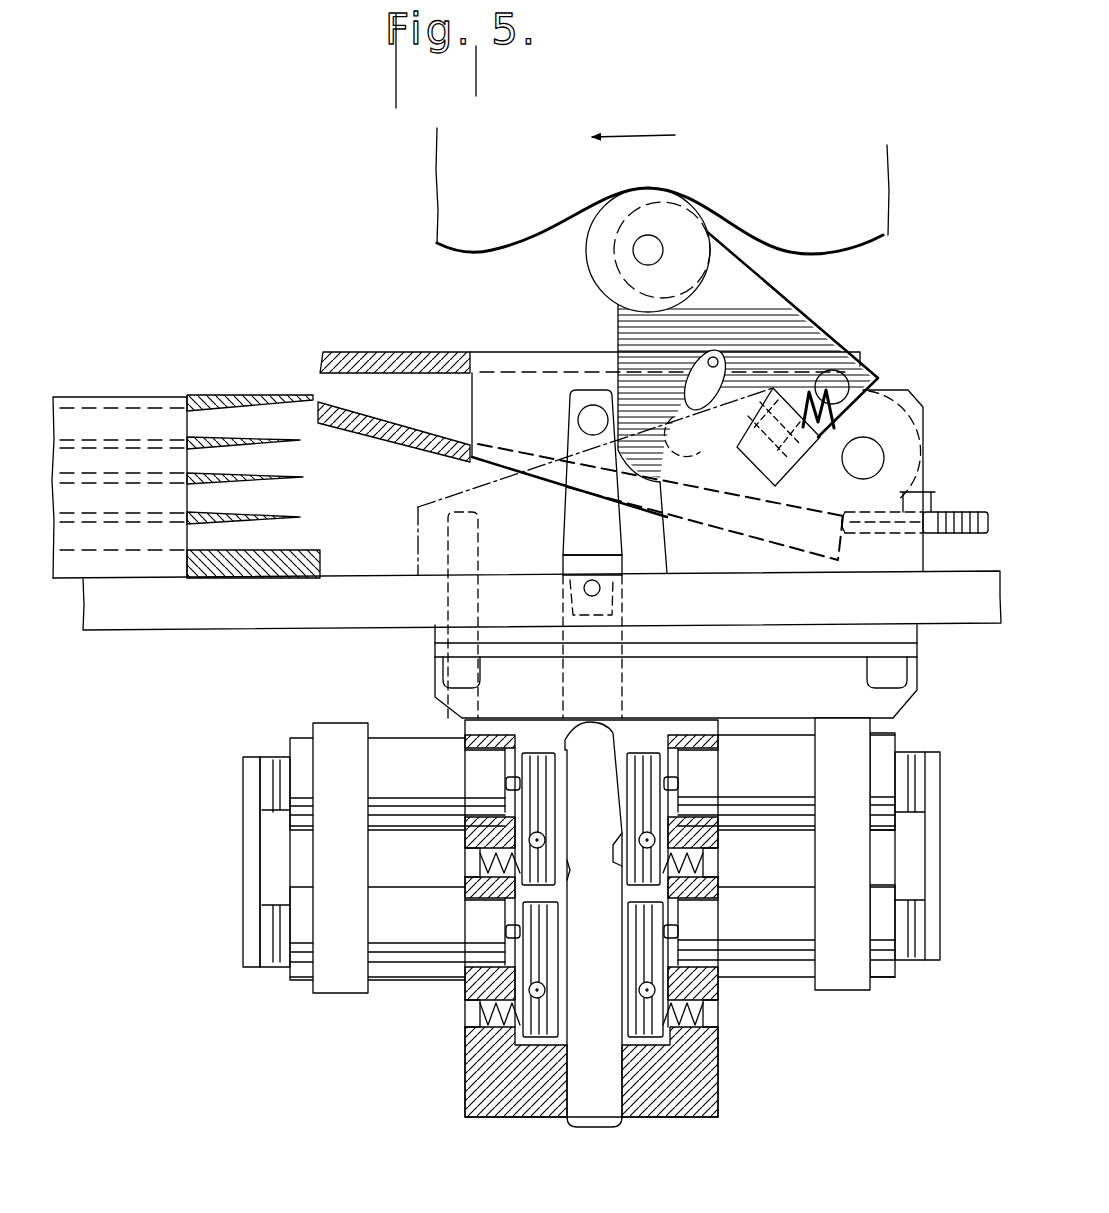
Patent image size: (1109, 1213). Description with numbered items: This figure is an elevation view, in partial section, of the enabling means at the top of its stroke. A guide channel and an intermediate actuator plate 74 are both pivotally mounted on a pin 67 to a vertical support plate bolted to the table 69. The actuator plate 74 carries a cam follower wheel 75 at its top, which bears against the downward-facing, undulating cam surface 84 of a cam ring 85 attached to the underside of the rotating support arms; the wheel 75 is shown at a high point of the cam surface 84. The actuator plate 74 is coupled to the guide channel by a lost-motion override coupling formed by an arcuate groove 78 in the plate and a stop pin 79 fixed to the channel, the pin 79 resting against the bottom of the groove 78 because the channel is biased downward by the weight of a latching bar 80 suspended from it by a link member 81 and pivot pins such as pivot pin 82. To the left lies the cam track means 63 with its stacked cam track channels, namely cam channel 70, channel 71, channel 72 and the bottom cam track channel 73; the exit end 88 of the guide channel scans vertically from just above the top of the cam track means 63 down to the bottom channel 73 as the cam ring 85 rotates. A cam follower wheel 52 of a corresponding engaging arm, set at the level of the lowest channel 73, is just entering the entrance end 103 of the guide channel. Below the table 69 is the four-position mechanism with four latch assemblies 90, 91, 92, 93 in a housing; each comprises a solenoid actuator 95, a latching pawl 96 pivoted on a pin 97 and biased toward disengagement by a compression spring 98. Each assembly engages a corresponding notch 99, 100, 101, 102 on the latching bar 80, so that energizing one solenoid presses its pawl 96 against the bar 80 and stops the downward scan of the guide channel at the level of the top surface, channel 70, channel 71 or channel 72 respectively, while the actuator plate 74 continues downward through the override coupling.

The cam follower wheel 52 is at (968, 535).
The cam track means 63 is at (193, 352).
The pin 67 is at (852, 470).
The table 69 is at (178, 617).
The cam channel 70 is at (197, 420).
The channel 71 is at (279, 462).
The channel 72 is at (274, 498).
The bottom cam track channel 73 is at (277, 537).
The actuator plate 74 is at (786, 308).
The cam follower wheel 75 is at (600, 268).
The arcuate groove 78 is at (716, 358).
The stop pin 79 is at (703, 455).
The latching bar 80 is at (608, 1112).
The link member 81 is at (570, 428).
The pivot pin 82 is at (580, 406).
The cam surface 84 is at (486, 250).
The cam ring 85 is at (852, 237).
The exit end 88 is at (314, 380).
The latch assembly 90 is at (230, 770).
The latch assembly 91 is at (953, 758).
The latch assembly 92 is at (338, 1012).
The latch assembly 93 is at (855, 1000).
The solenoid actuator 95 is at (400, 748).
The latching pawl 96 is at (546, 790).
The pin 97 is at (541, 840).
The compression spring 98 is at (478, 862).
The notch 99 is at (578, 751).
The notch 100 is at (645, 722).
The notch 101 is at (572, 888).
The notch 102 is at (619, 856).
The entrance end 103 is at (880, 380).